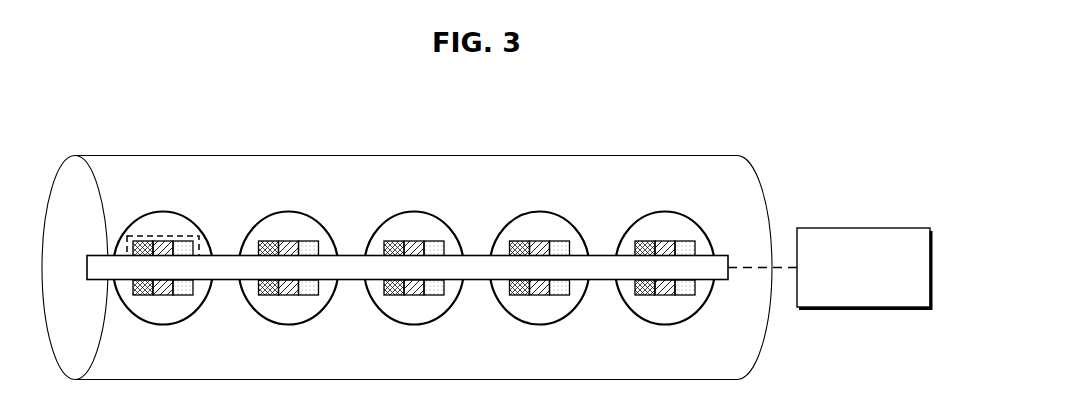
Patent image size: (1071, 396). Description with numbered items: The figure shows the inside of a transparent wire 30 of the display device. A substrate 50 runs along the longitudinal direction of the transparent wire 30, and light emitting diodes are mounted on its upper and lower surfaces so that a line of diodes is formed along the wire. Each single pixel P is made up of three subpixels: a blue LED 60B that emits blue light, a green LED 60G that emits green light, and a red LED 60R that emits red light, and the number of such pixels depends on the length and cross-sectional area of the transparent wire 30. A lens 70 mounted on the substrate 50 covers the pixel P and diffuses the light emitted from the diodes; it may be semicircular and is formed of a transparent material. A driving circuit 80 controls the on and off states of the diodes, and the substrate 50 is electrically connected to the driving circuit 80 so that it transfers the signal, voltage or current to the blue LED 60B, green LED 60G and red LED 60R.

The transparent wire 30 is at (347, 156).
The substrate 50 is at (225, 280).
The blue LED 60B is at (142, 240).
The green LED 60G is at (160, 240).
The red LED 60R is at (183, 240).
The lens 70 is at (212, 228).
The driving circuit 80 is at (862, 228).
The pixel P is at (124, 239).